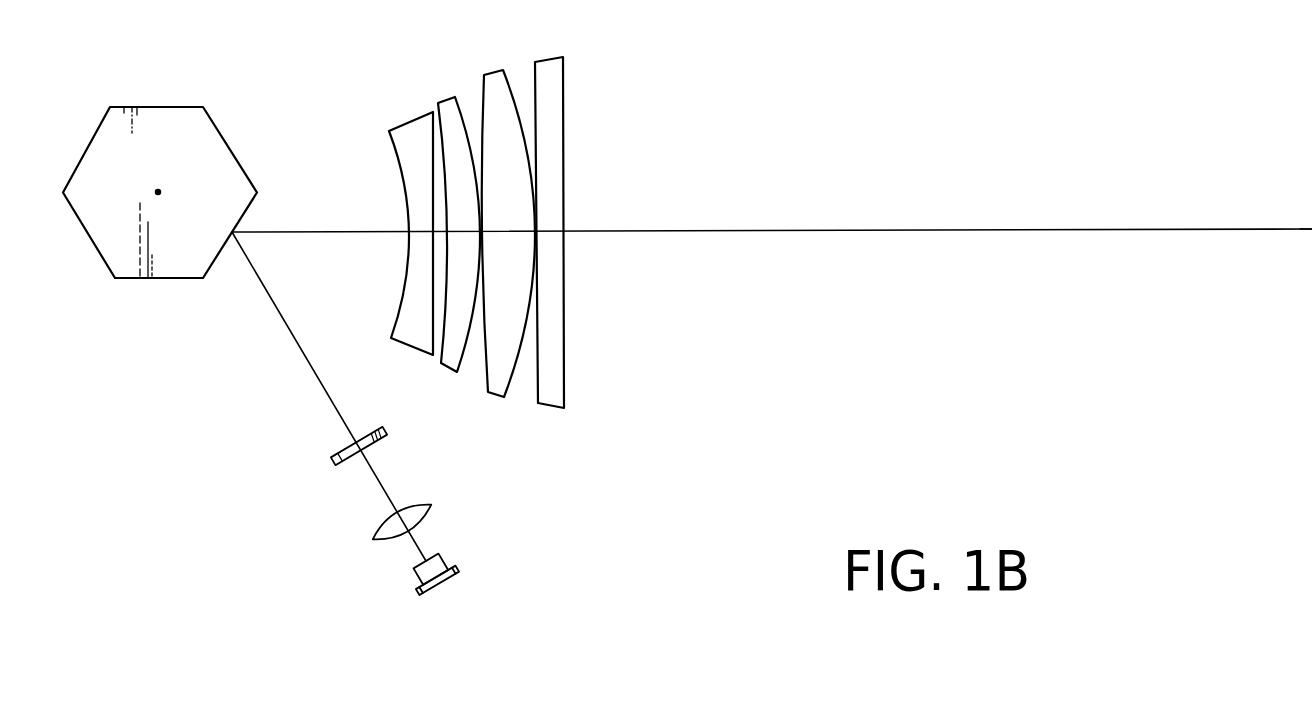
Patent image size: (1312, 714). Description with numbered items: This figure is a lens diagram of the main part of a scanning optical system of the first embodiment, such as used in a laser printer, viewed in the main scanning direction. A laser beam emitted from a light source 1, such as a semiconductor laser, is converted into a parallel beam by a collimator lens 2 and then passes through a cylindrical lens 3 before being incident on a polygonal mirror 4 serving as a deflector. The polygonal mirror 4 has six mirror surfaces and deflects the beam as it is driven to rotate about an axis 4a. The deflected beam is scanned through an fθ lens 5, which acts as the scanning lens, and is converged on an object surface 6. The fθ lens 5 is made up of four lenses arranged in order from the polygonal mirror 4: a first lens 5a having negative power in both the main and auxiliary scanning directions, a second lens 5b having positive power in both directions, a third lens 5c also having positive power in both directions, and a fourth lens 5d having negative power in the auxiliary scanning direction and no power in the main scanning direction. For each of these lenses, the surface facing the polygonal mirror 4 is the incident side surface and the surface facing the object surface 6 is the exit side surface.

The light source 1 is at (418, 578).
The collimator lens 2 is at (378, 527).
The cylindrical lens 3 is at (332, 461).
The polygonal mirror 4 is at (172, 270).
The axis 4a is at (156, 192).
The fθ lens 5 is at (488, 288).
The first lens 5a is at (414, 340).
The second lens 5b is at (447, 363).
The third lens 5c is at (495, 392).
The fourth lens 5d is at (559, 262).
The object surface 6 is at (1311, 126).